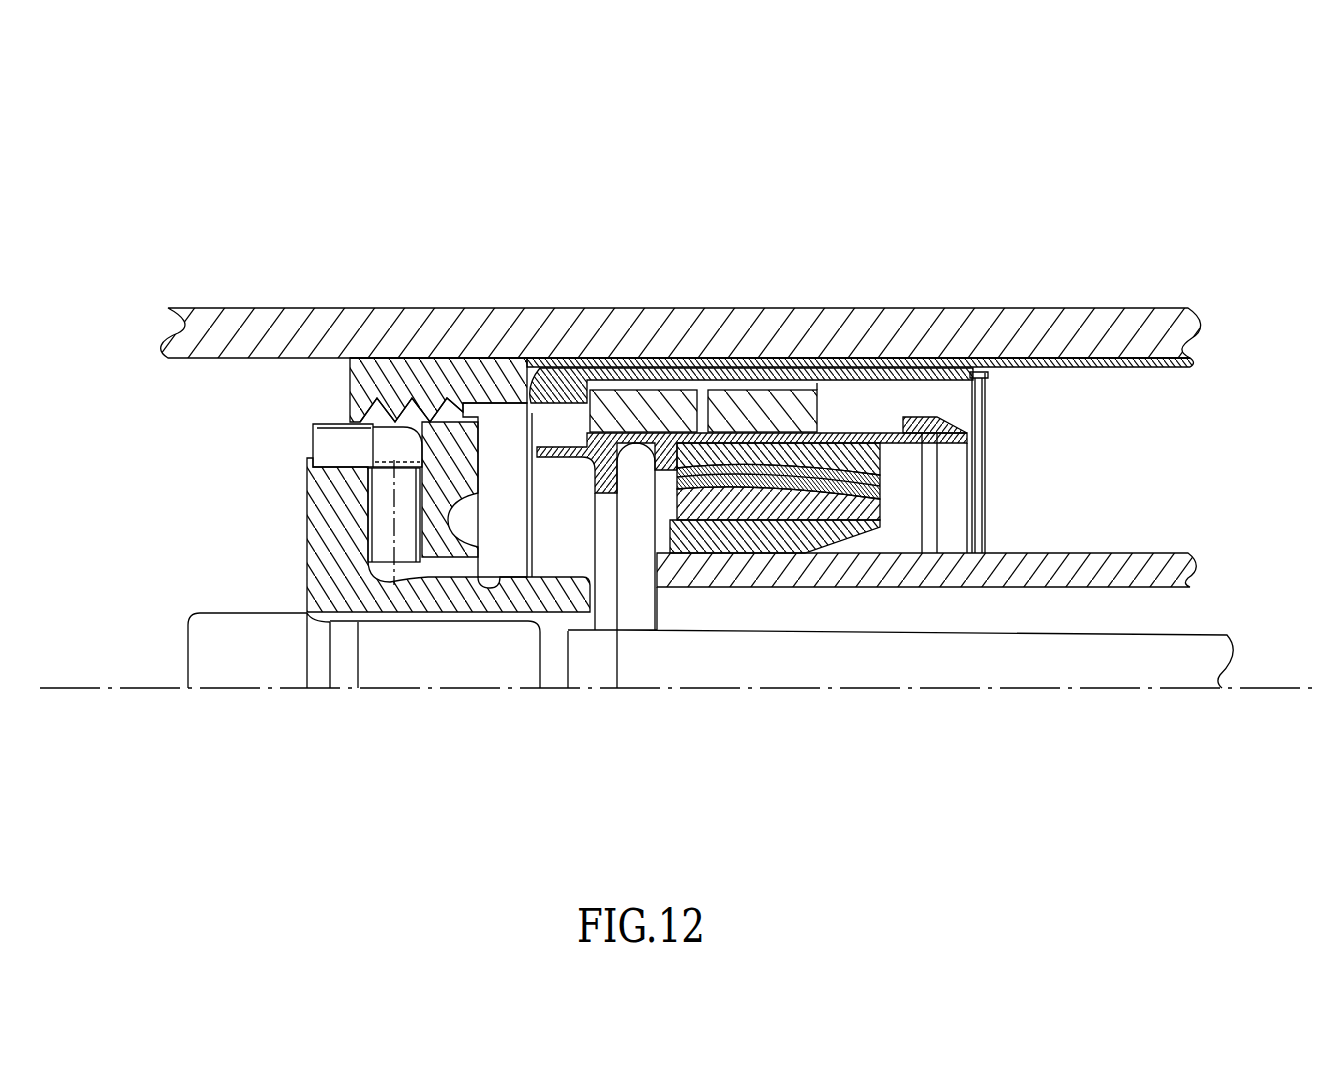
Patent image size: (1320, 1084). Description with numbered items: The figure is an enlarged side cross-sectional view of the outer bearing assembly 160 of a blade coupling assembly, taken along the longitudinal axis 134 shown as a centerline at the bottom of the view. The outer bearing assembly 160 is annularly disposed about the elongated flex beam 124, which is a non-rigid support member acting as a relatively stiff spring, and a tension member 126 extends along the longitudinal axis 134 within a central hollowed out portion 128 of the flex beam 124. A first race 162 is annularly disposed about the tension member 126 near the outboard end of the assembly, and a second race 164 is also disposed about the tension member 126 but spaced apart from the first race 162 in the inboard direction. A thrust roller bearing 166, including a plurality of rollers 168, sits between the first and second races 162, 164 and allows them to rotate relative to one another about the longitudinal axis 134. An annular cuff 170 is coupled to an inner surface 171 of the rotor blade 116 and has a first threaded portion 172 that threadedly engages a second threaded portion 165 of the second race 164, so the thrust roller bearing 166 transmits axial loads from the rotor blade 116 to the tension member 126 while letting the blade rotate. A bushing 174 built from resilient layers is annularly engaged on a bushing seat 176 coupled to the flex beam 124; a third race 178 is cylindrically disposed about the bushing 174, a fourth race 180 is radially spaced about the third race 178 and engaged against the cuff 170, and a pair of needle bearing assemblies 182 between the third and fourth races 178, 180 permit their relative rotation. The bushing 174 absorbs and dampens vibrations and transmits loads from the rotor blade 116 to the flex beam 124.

The rotor blade 116 is at (366, 308).
The flex beam 124 is at (993, 573).
The tension member 126 is at (187, 652).
The hollowed out portion 128 is at (878, 617).
The longitudinal axis 134 is at (160, 688).
The outer bearing assembly 160 is at (283, 124).
The first race 162 is at (320, 478).
The second race 164 is at (455, 497).
The second threaded portion 165 is at (442, 404).
The thrust roller bearing 166 is at (281, 446).
The rollers 168 is at (386, 520).
The annular cuff 170 is at (1070, 368).
The inner surface 171 is at (1040, 356).
The first threaded portion 172 is at (350, 378).
The bushing 174 is at (893, 480).
The bushing seat 176 is at (653, 605).
The third race 178 is at (985, 444).
The fourth race 180 is at (986, 374).
The needle bearing assemblies 182 is at (766, 390).